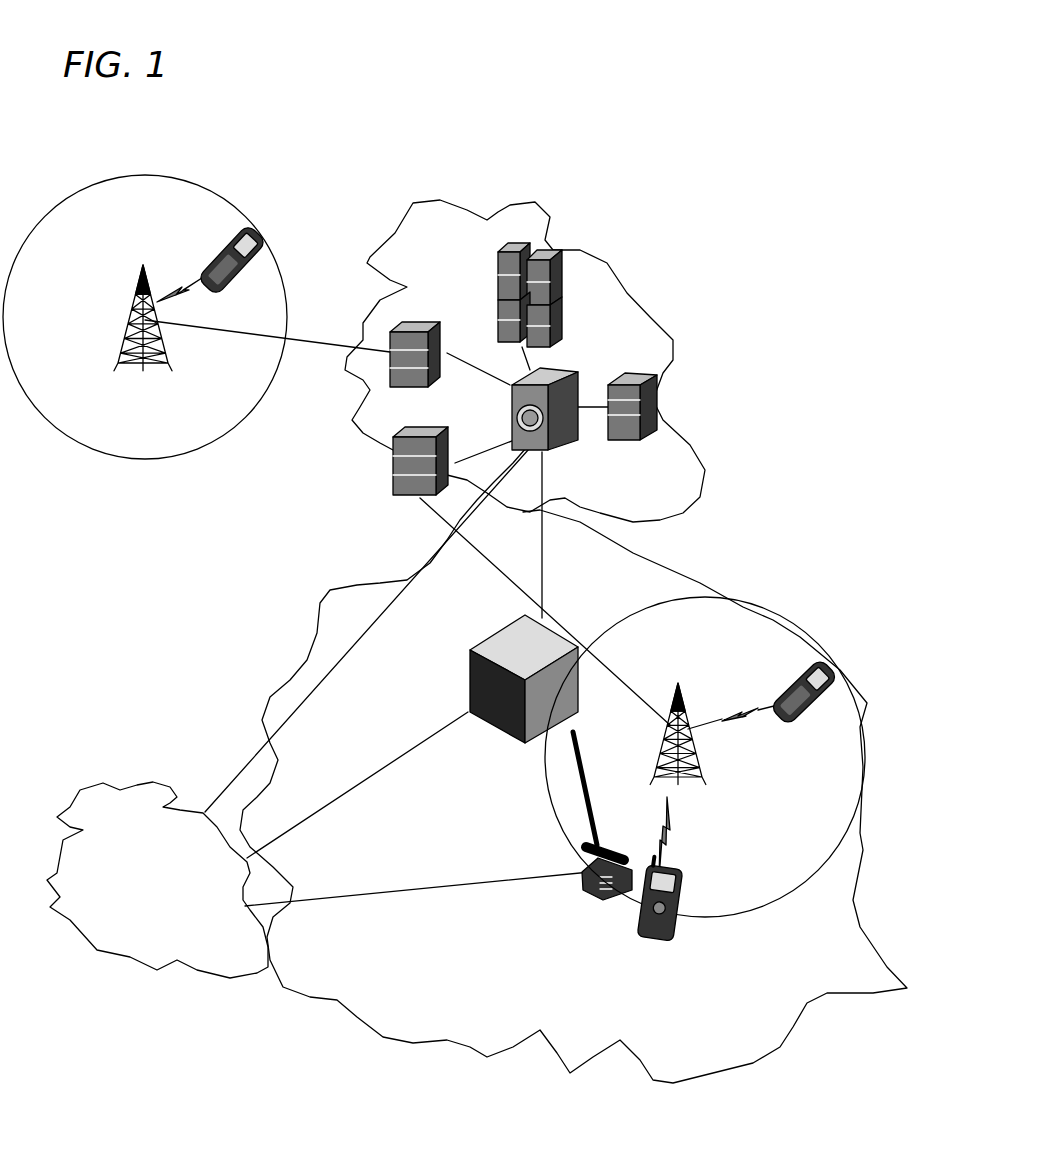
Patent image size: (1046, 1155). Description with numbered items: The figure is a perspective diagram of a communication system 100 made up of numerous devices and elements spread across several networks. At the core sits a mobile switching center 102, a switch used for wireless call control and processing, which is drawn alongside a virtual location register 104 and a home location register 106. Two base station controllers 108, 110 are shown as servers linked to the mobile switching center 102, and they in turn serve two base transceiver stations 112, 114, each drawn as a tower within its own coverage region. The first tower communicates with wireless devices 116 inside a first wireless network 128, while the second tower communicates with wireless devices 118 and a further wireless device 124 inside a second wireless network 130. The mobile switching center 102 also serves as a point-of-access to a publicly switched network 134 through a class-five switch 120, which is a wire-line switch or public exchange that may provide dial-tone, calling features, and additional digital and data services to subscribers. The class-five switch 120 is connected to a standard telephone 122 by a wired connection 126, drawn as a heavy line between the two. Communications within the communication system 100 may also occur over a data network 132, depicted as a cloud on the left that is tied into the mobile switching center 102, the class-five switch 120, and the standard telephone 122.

The communication system 100 is at (525, 319).
The mobile switching center 102 is at (570, 453).
The virtual location register (VLR) 104 is at (645, 390).
The home location register (HLR) 106 is at (553, 255).
The base station controller (BSC) 108 is at (408, 345).
The base station controller (BSC) 110 is at (410, 478).
The base transceiver station (BTS) 112 is at (143, 320).
The base transceiver station (BTS) 114 is at (677, 723).
The wireless devices 116 is at (240, 240).
The wireless devices 118 is at (817, 700).
The class 5 switch 120 is at (470, 690).
The standard telephone 122 is at (603, 883).
The wireless device 124 is at (680, 917).
The wired connection 126 is at (578, 765).
The wireless network 128 is at (100, 424).
The wireless network 130 is at (670, 643).
The data network 132 is at (139, 903).
The publicly switched network 134 is at (573, 761).